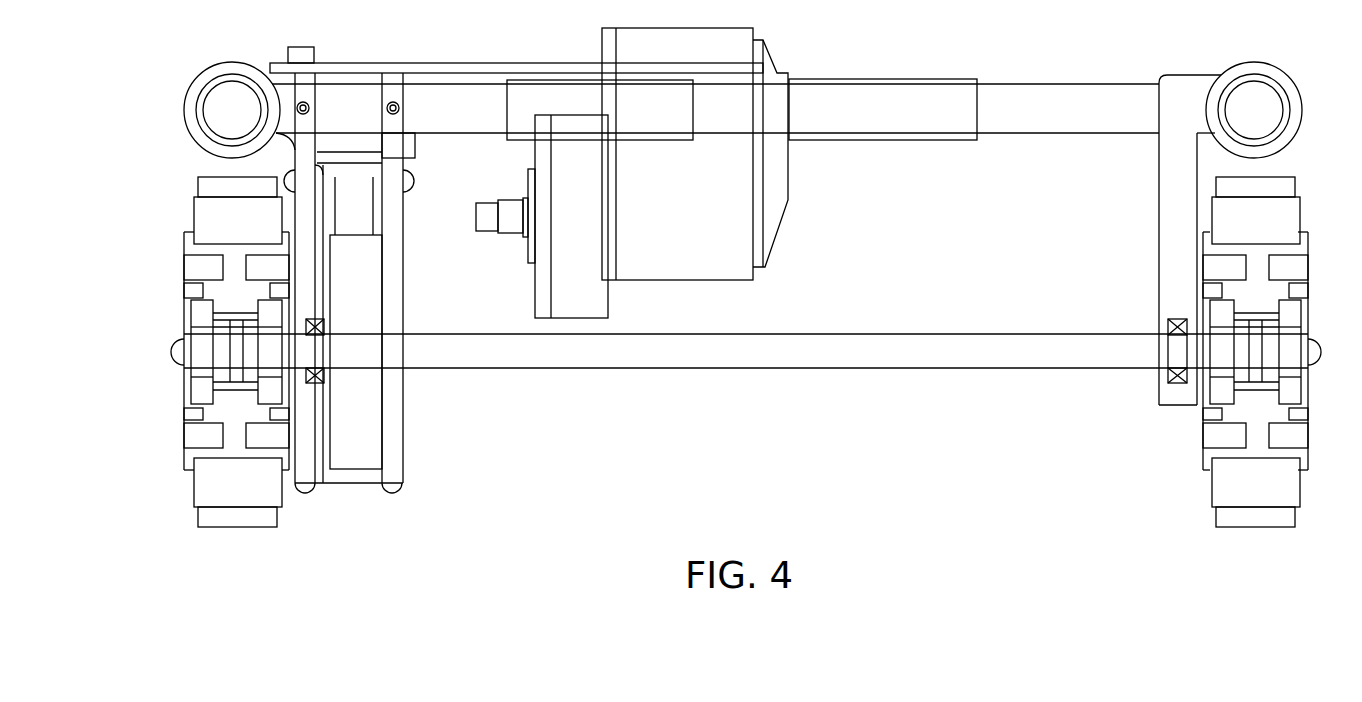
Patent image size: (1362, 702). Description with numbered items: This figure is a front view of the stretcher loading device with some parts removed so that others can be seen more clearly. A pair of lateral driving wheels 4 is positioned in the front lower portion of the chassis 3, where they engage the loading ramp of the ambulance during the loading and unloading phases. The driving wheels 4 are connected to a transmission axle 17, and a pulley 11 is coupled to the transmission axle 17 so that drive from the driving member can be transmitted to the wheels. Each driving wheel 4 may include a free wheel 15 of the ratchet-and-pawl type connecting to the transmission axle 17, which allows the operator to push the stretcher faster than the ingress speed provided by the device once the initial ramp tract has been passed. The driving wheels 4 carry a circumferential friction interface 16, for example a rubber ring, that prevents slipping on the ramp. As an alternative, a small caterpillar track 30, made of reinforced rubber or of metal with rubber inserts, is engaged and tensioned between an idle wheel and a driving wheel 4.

The chassis 3 is at (880, 97).
The lateral driving wheels 4 is at (218, 413).
The pulley 11 is at (372, 426).
The free wheel 15 is at (236, 313).
The circumferential friction interface 16 is at (233, 497).
The transmission axle 17 is at (748, 358).
The caterpillar track 30 is at (253, 527).